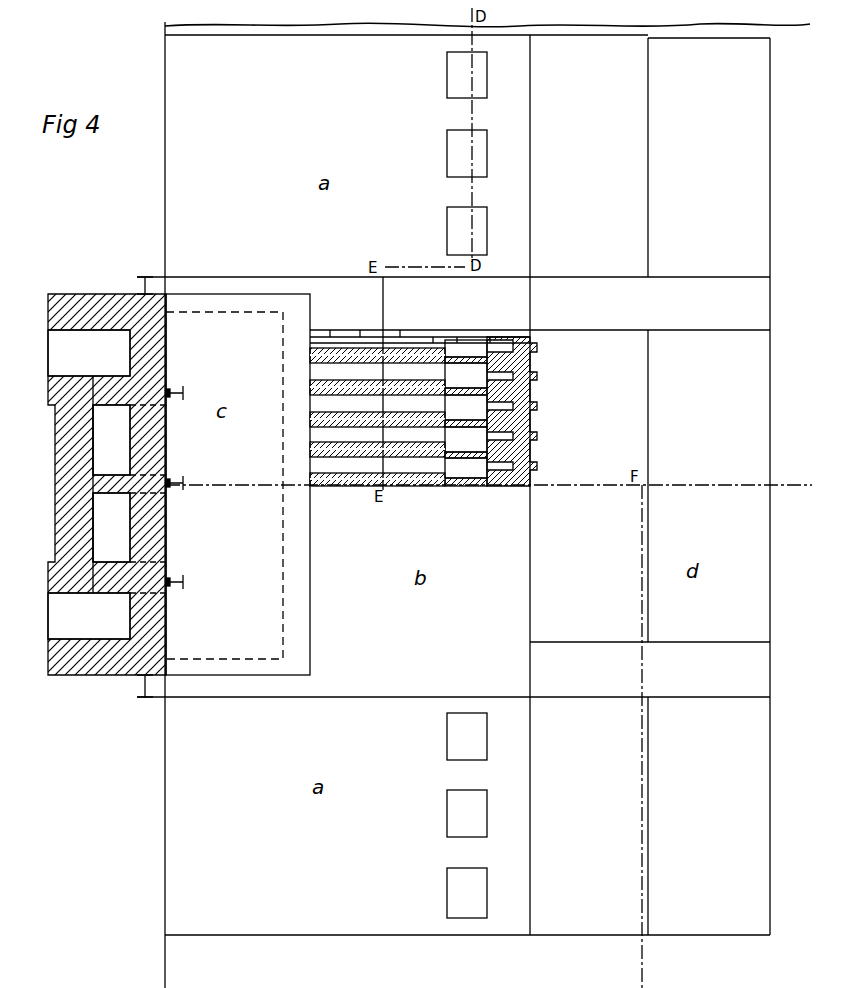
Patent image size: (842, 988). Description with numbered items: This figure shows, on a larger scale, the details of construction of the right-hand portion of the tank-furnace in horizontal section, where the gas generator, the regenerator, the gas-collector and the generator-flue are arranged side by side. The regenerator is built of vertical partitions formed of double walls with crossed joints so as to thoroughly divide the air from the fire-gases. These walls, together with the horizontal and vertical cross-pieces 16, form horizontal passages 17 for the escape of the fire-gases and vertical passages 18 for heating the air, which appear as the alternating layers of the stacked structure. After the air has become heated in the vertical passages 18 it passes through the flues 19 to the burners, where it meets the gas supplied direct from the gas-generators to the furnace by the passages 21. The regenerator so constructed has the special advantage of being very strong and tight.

The vertical cross-pieces 16 is at (400, 497).
The horizontal passages 17 is at (433, 373).
The vertical passages 18 is at (391, 348).
The flues 19 is at (89, 484).
The passages 21 is at (111, 483).